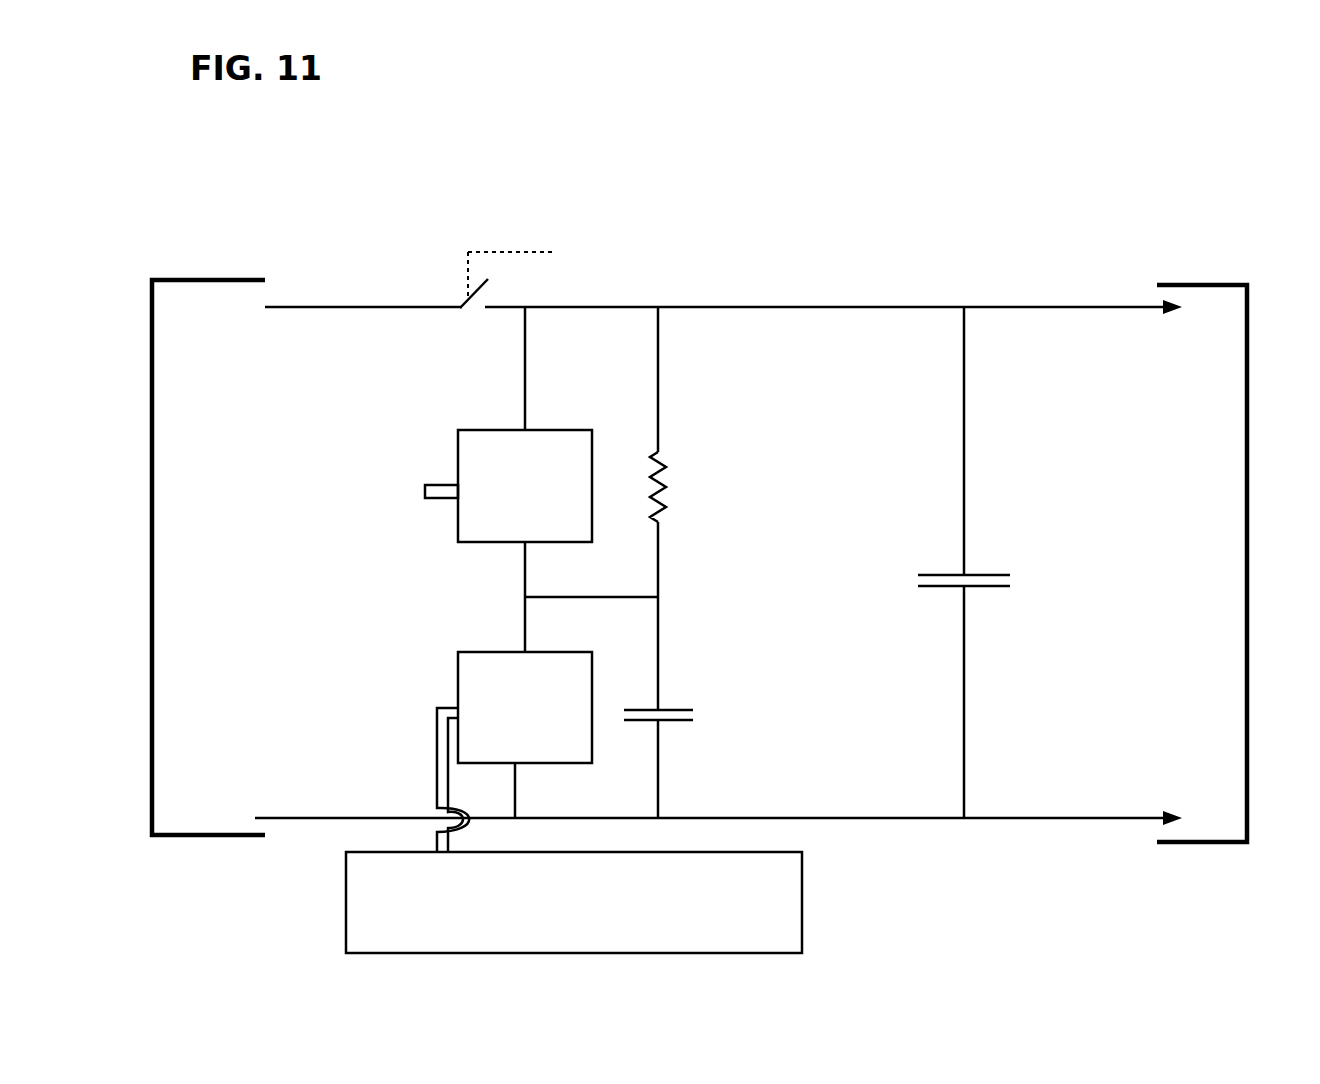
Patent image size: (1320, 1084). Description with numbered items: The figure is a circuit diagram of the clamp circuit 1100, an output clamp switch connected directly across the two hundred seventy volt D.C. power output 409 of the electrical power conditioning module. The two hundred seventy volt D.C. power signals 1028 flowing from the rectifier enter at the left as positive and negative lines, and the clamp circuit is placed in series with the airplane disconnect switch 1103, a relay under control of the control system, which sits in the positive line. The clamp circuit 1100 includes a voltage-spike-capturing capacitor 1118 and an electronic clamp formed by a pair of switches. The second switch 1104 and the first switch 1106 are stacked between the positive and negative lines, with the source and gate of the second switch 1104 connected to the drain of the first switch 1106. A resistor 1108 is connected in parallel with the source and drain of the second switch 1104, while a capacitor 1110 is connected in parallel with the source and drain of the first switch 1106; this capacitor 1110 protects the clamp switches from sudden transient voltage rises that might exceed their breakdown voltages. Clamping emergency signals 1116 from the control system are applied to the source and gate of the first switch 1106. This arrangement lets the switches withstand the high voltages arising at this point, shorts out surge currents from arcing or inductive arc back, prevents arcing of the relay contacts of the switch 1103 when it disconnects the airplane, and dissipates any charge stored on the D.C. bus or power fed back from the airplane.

The clamp circuit 1100 is at (556, 155).
The 270 volt D.C. power signals V2+ and V2- 1028 is at (152, 458).
The 270 volt D.C. power output 409 is at (1249, 620).
The airplane disconnect switch 1103 is at (462, 302).
The second switch 1104 is at (457, 447).
The first switch 1106 is at (457, 667).
The resistor 1108 is at (665, 473).
The capacitor 1110 is at (670, 705).
The clamping emergency signals 1116 is at (358, 873).
The voltage-spike-capturing capacitor 1118 is at (977, 560).